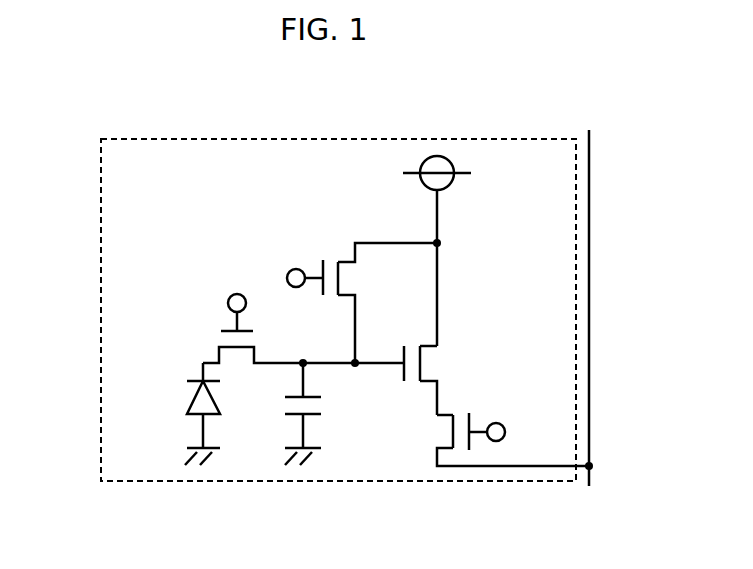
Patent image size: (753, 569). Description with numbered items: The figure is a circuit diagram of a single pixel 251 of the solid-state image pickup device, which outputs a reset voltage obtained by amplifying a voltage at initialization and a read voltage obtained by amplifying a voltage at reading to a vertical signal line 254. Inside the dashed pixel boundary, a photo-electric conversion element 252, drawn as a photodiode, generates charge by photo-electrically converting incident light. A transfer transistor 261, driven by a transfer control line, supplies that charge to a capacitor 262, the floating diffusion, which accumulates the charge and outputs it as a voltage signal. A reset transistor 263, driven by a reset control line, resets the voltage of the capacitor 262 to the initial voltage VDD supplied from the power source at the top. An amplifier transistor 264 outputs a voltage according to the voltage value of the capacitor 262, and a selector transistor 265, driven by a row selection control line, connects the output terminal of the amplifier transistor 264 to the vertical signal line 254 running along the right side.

The pixel 251 is at (101, 172).
The photo-electric conversion element 252 is at (192, 400).
The vertical signal line 254 is at (591, 267).
The transfer transistor 261 is at (218, 338).
The capacitor 262 is at (318, 408).
The reset transistor 263 is at (332, 255).
The amplifier transistor 264 is at (438, 362).
The selector transistor 265 is at (438, 430).